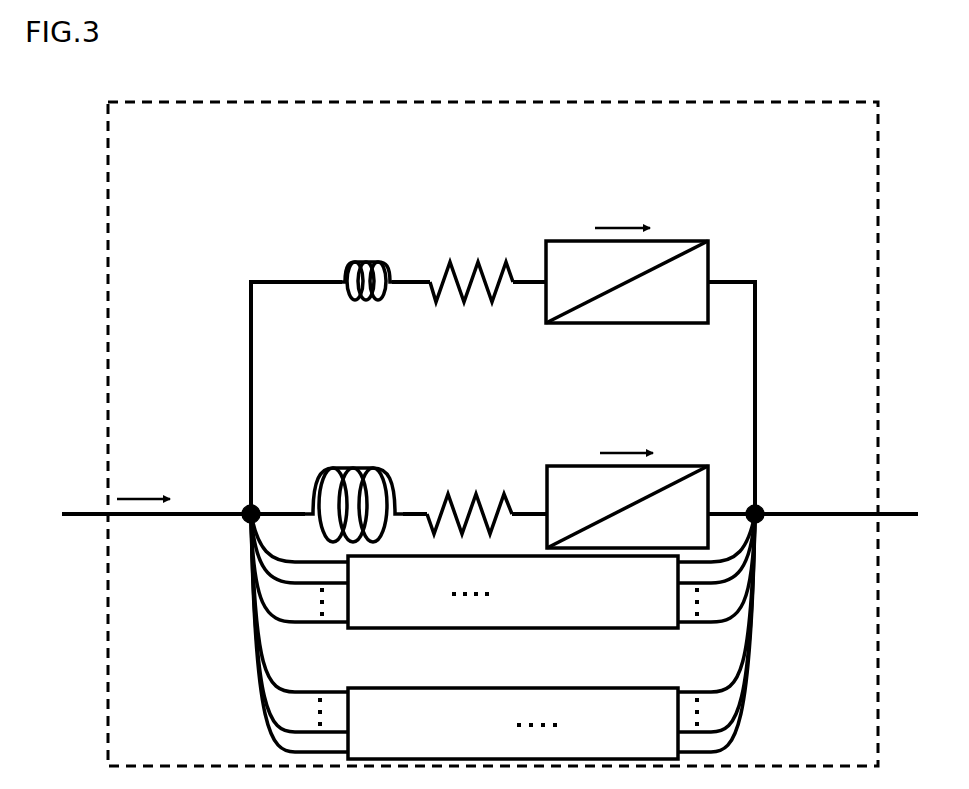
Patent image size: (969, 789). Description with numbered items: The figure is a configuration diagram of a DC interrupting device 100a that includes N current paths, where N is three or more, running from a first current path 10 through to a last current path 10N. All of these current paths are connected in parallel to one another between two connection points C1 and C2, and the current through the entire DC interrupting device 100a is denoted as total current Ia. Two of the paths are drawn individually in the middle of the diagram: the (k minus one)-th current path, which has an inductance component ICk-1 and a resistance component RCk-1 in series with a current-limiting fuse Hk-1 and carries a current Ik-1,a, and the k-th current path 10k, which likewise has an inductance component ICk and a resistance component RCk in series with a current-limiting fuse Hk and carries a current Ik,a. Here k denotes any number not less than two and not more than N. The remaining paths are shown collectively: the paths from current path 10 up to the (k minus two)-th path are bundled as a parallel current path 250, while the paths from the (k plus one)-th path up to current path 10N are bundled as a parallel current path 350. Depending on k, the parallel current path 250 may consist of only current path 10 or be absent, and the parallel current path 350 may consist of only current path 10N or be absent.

The DC interrupting device 100a is at (232, 102).
The current path 10k is at (506, 449).
The current path 10 is at (440, 607).
The current path 10N is at (620, 738).
The parallel current path 250 is at (503, 596).
The parallel current path 350 is at (503, 636).
The connection point C1 is at (243, 506).
The connection point C2 is at (762, 506).
The total current Ia is at (152, 493).
The inductance component ICk-1 is at (360, 262).
The resistance component RCk-1 is at (447, 262).
The current-limiting fuse Hk-1 is at (546, 240).
The current Ik-1,a is at (627, 225).
The inductance component ICk is at (340, 466).
The resistance component RCk is at (474, 490).
The current-limiting fuse Hk is at (550, 465).
The current Ik,a is at (630, 450).